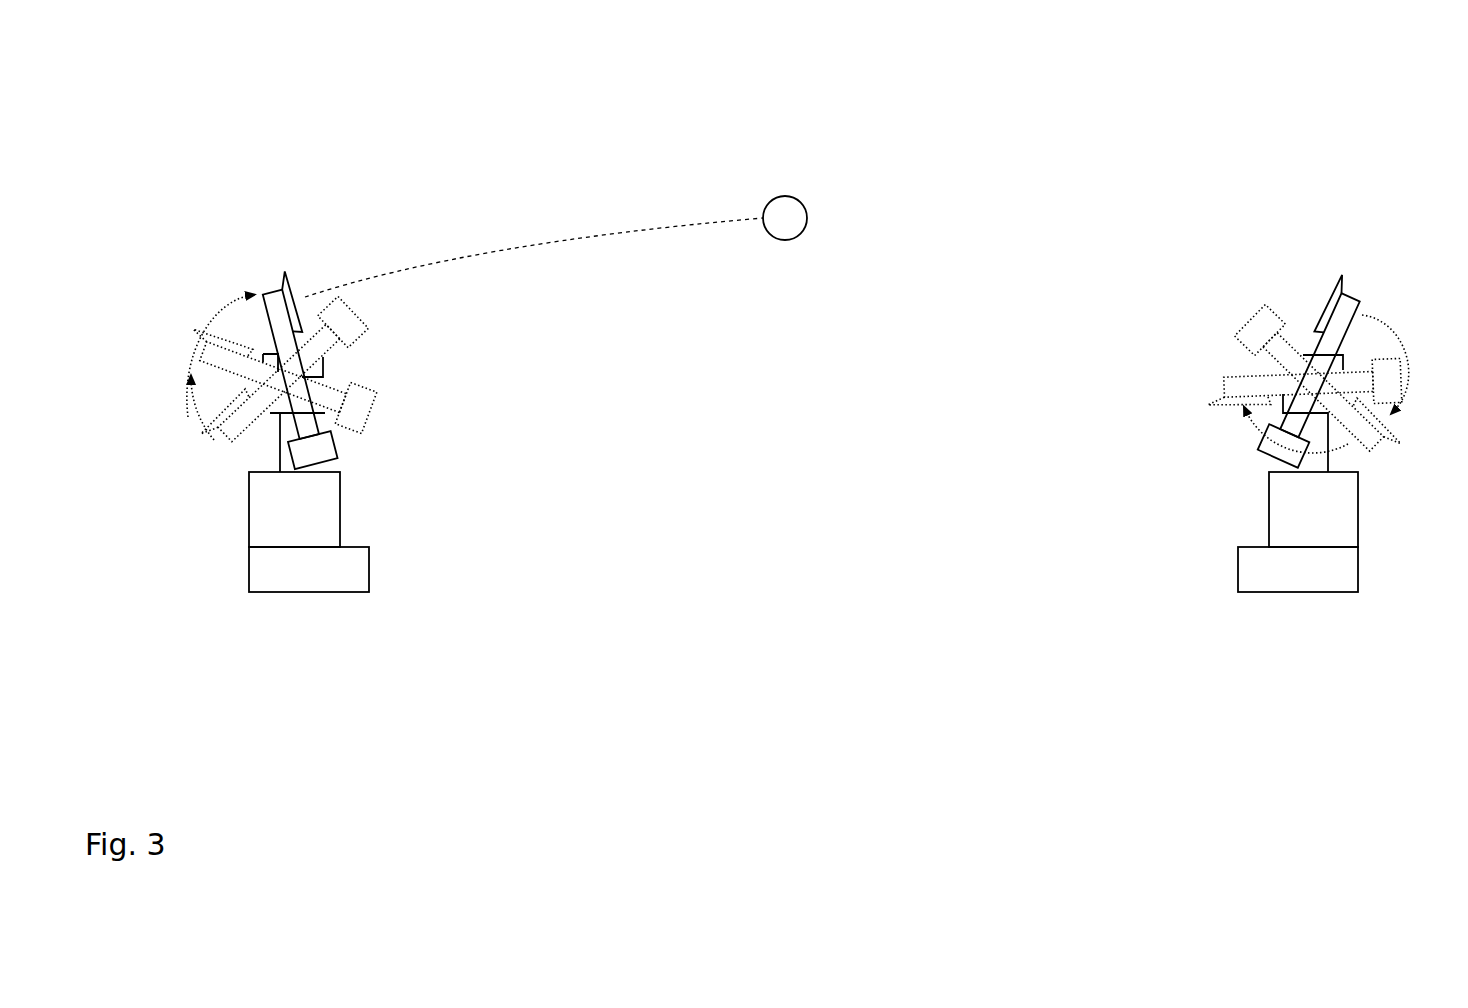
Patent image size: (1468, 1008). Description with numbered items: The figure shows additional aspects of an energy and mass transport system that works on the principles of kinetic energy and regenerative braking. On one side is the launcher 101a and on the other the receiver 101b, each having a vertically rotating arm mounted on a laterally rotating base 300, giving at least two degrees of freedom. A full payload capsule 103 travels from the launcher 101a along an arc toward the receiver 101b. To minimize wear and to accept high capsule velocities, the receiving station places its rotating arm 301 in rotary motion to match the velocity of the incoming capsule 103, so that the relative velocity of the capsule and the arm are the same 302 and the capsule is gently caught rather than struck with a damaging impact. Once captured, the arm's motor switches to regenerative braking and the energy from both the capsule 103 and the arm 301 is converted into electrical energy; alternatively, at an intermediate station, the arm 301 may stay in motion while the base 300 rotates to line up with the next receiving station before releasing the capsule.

The capsule 103 is at (787, 188).
The rotating arm 301 is at (303, 378).
The base 300 is at (1260, 527).
The arm in motion to absorb damaging portion of kinetic energy 302 is at (1295, 287).
The launcher 101a is at (350, 600).
The receiver 101b is at (1328, 593).